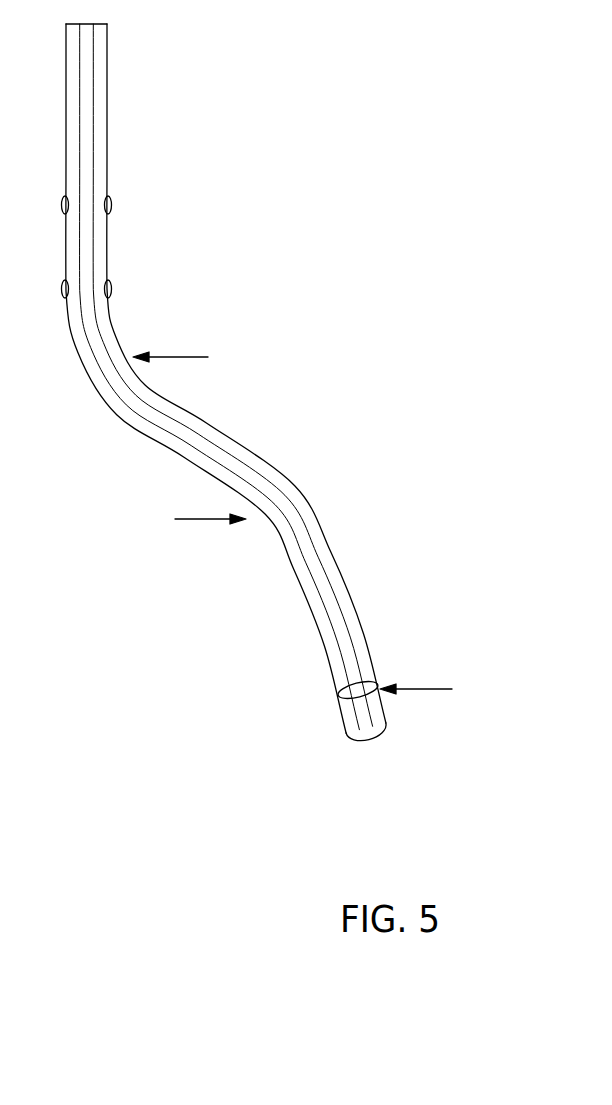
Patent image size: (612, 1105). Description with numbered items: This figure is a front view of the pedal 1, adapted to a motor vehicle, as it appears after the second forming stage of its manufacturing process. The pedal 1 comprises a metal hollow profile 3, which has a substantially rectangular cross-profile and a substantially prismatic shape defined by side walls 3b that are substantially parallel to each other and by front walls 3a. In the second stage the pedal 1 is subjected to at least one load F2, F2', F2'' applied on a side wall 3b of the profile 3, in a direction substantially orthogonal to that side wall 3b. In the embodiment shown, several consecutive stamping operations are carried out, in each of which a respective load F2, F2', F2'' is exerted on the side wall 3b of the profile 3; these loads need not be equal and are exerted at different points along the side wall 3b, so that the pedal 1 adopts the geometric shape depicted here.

The pedal 1 is at (287, 387).
The hollow profile 3 is at (92, 127).
The front walls 3a is at (357, 693).
The side walls 3b is at (347, 722).
The load F2 is at (202, 356).
The load F2' is at (177, 521).
The load F2'' is at (449, 686).